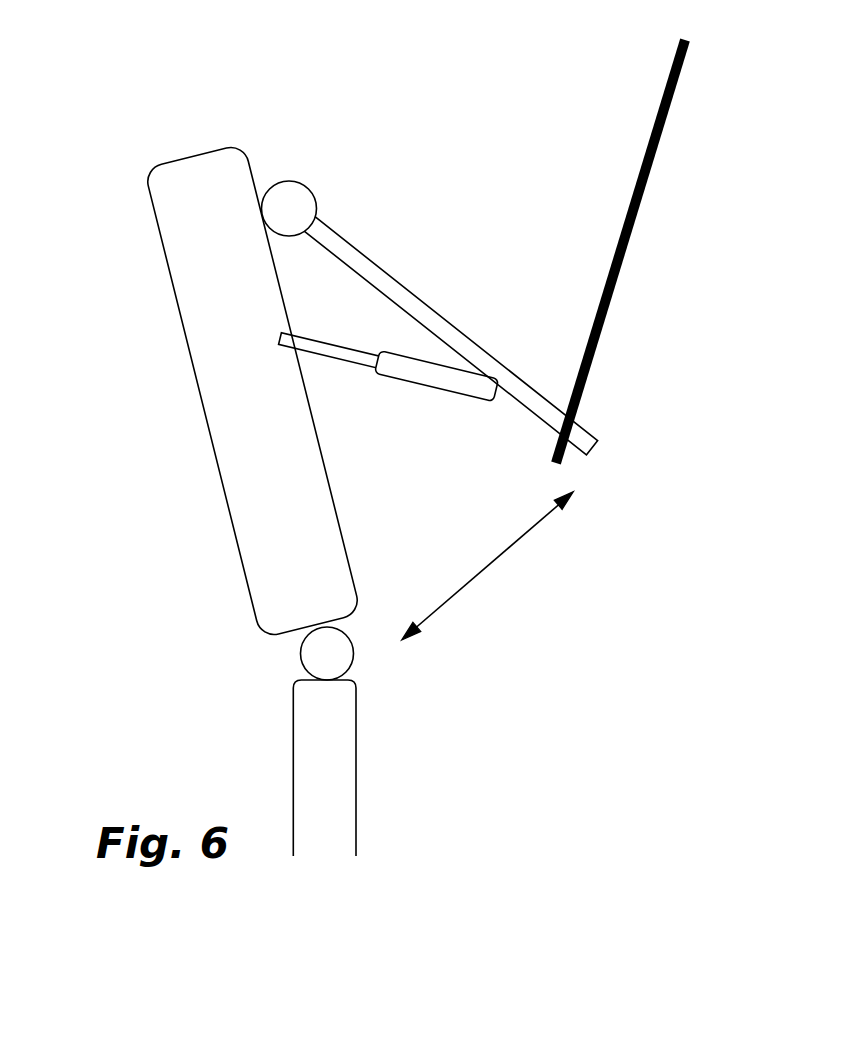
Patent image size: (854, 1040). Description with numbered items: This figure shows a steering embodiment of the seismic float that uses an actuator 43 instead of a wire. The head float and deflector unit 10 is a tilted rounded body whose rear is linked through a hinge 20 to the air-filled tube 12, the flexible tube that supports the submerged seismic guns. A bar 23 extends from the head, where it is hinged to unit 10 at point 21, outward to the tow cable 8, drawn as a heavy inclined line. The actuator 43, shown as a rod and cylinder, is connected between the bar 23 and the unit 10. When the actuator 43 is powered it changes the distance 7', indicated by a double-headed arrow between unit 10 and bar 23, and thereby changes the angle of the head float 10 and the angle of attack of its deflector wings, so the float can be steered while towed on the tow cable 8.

The head 10 is at (158, 228).
The air-filled tube 12 is at (312, 720).
The hinge 20 is at (326, 654).
The hinge point 21 is at (300, 203).
The bar 23 is at (410, 302).
The actuator 43 is at (443, 388).
The tow cable 8 is at (658, 142).
The distance 7' is at (498, 566).